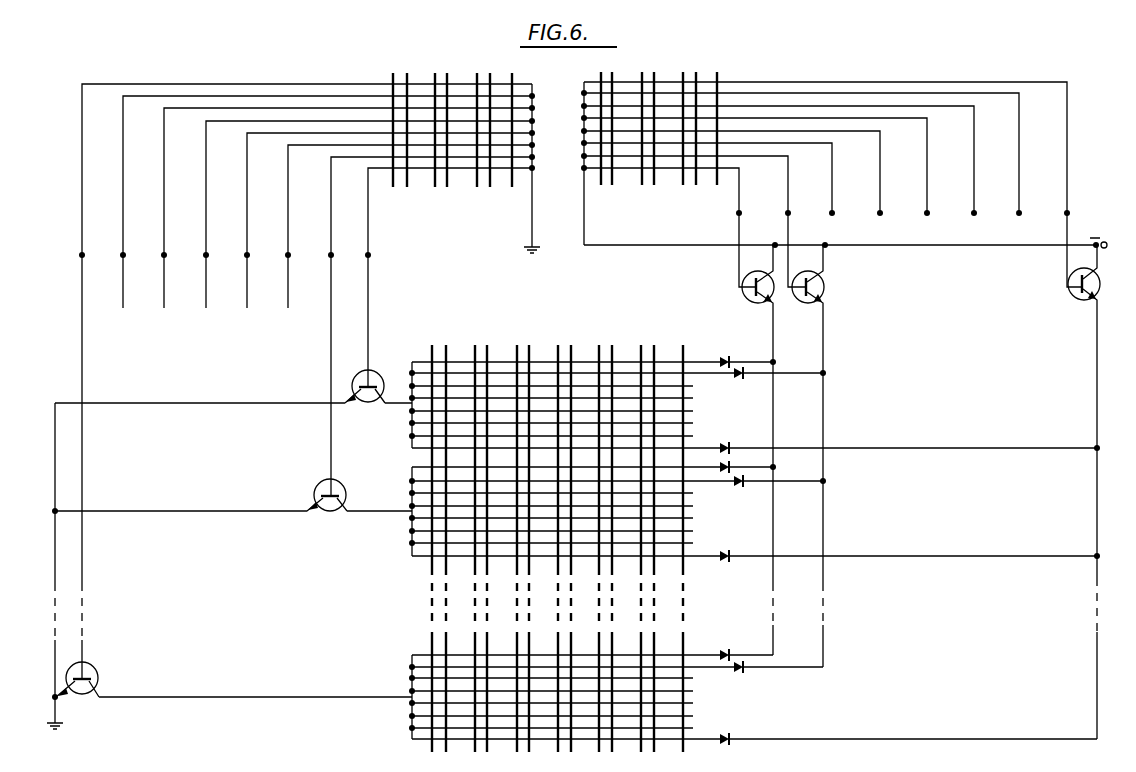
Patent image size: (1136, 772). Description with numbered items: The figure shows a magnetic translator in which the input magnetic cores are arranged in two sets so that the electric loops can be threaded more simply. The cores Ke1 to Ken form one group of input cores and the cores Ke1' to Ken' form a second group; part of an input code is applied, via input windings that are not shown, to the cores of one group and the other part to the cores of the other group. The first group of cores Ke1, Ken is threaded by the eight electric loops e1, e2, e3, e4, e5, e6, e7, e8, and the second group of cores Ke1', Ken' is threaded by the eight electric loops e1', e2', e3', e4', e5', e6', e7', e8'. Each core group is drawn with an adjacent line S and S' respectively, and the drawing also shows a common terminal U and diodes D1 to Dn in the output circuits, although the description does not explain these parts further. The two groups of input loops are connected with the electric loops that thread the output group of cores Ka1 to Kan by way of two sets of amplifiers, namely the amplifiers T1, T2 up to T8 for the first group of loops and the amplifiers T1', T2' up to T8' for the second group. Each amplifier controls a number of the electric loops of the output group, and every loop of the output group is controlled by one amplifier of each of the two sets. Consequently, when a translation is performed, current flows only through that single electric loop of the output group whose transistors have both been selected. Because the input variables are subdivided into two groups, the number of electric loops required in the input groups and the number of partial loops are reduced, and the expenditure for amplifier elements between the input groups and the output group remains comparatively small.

The electric loop e1 is at (434, 277).
The electric loop e2 is at (413, 326).
The electric loop e3 is at (392, 226).
The electric loop e4 is at (372, 220).
The electric loop e5 is at (351, 214).
The electric loop e6 is at (330, 208).
The electric loop e7 is at (310, 202).
The electric loop e8 is at (289, 381).
The electric loop e1' is at (682, 227).
The electric loop e2' is at (707, 221).
The electric loop e3' is at (729, 185).
The electric loop e4' is at (753, 179).
The electric loop e5' is at (776, 172).
The electric loop e6' is at (800, 166).
The electric loop e7' is at (822, 160).
The electric loop e8' is at (846, 184).
The input core Ke1 is at (399, 142).
The input core Ken is at (473, 142).
The common return line S is at (526, 163).
The input core Ke1' is at (611, 141).
The input core Ken' is at (686, 141).
The common line S' is at (655, 158).
The output core Ka1 is at (432, 535).
The output core Kan is at (674, 534).
The diode D1 is at (592, 349).
The diode Dn is at (754, 726).
The amplifier T1 is at (233, 403).
The amplifier T2 is at (232, 510).
The amplifier T8 is at (232, 681).
The amplifier T1' is at (746, 450).
The amplifier T2' is at (806, 456).
The amplifier T8' is at (1077, 492).
The supply voltage terminal U is at (854, 245).